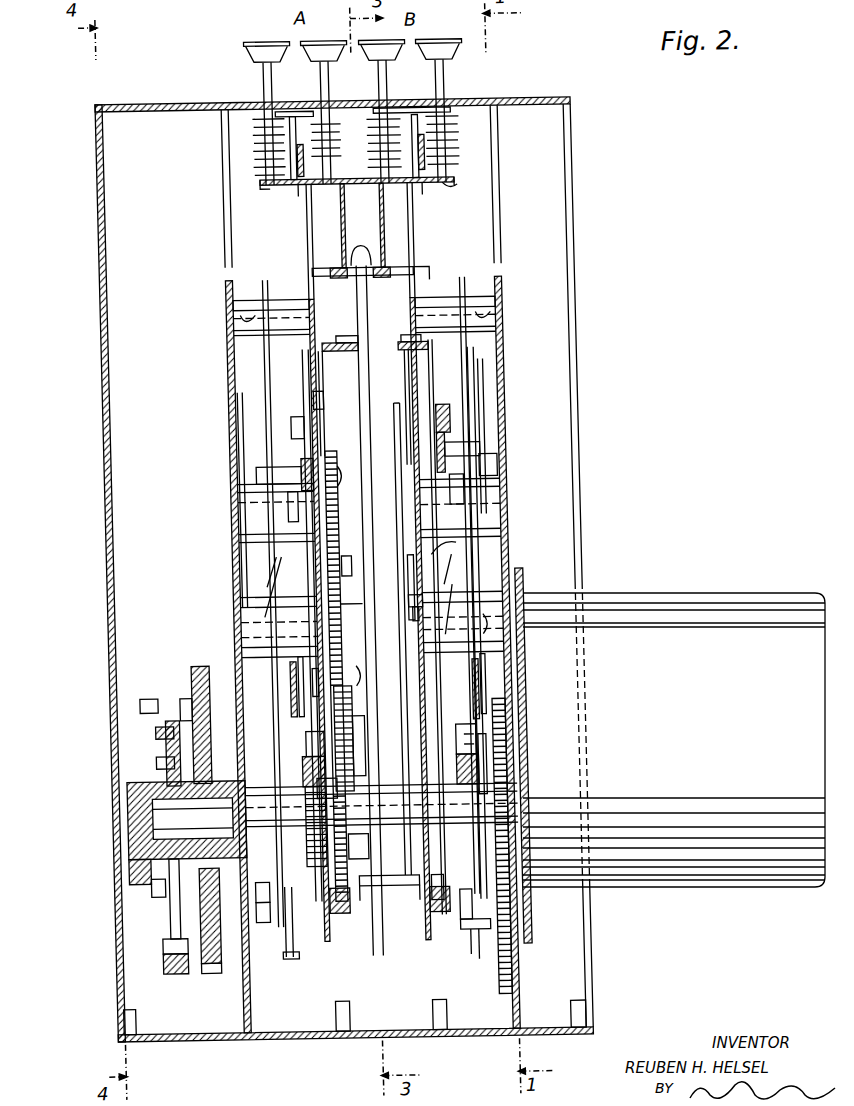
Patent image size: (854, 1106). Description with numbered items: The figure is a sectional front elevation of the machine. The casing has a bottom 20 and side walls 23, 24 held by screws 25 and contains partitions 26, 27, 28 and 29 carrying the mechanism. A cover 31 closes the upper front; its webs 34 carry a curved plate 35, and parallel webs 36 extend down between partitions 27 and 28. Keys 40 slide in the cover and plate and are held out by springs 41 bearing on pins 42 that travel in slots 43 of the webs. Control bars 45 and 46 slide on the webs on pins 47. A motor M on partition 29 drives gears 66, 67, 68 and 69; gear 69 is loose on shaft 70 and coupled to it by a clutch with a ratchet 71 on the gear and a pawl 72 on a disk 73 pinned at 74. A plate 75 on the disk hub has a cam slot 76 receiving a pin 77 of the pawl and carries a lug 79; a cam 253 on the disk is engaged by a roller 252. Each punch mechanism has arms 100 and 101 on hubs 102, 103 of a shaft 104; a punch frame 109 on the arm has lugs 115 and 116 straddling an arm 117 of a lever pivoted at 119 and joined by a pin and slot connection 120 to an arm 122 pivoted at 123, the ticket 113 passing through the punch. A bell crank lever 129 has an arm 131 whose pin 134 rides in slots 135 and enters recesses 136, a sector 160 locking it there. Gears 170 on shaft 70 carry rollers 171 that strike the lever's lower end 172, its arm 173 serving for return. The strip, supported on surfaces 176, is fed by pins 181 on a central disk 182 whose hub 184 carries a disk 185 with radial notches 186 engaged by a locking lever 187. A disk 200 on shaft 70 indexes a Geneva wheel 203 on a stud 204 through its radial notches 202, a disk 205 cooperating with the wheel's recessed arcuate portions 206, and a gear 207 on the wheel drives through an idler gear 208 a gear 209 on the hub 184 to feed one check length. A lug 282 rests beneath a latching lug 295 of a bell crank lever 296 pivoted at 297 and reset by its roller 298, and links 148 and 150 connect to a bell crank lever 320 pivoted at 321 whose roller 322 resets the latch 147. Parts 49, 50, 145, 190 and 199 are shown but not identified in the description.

The bottom 20 is at (295, 1042).
The side wall 23 is at (95, 935).
The side wall 24 is at (571, 930).
The screws 25 is at (563, 1015).
The partition 26 is at (232, 990).
The partition 27 is at (310, 348).
The partition 28 is at (412, 330).
The partition 29 is at (498, 975).
The cover 31 is at (196, 104).
The webs 34 is at (296, 195).
The plate 35 is at (342, 210).
The parallel webs 36 is at (342, 252).
The keys 40 is at (378, 86).
The springs 41 is at (262, 158).
The lugs or pins 42 is at (276, 110).
The slots 43 is at (385, 132).
The control bar 45 is at (425, 190).
The control bar 46 is at (283, 190).
The pins or screws 47 is at (262, 146).
The contact spring 49 is at (262, 126).
The contact spring 50 is at (384, 156).
The gear 66 is at (491, 730).
The gear 67 is at (511, 945).
The gear 68 is at (200, 920).
The gear 69 is at (184, 975).
The shaft 70 is at (218, 800).
The ratchet 71 is at (158, 885).
The pawl 72 is at (195, 715).
The disk 73 is at (140, 896).
The pin 74 is at (140, 871).
The plate 75 is at (142, 740).
The inclined cam slot 76 is at (168, 700).
The pin 77 is at (142, 764).
The lug 79 is at (134, 700).
The arm 100 is at (455, 568).
The arm 101 is at (292, 580).
The hub or sleeve 102 is at (462, 598).
The hub or sleeve 103 is at (294, 560).
The shaft 104 is at (250, 505).
The punch frame 109 is at (260, 540).
The ticket 113 is at (412, 270).
The lug 115 is at (268, 480).
The lug 116 is at (248, 517).
The arm 117 is at (250, 645).
The pivot 119 is at (250, 660).
The pin and slot connection 120 is at (230, 400).
The arm 122 is at (258, 292).
The pivot 123 is at (228, 318).
The bell crank lever 129 is at (286, 432).
The upwardly extending arm 131 is at (296, 385).
The lug or pin 134 is at (316, 358).
The slots 135 is at (316, 405).
The recesses 136 is at (318, 347).
The rack gear 145 is at (312, 447).
The latch 147 is at (364, 385).
The link 148 is at (304, 745).
The link 150 is at (286, 770).
The sector 160 is at (314, 408).
The gears 170 is at (322, 916).
The roller 171 is at (262, 915).
The lower end 172 is at (250, 900).
The laterally extending arm 173 is at (284, 700).
The surfaces 176 is at (336, 284).
The peripheral lugs or pins 181 is at (366, 262).
The central disk 182 is at (385, 450).
The hub 184 is at (396, 592).
The disk 185 is at (396, 606).
The radial notches 186 is at (400, 622).
The lever 187 is at (350, 740).
The bracket 190 is at (378, 890).
The pawl 199 is at (352, 605).
The disk 200 is at (352, 845).
The radial notches 202 is at (338, 772).
The Geneva wheel 203 is at (332, 690).
The stud 204 is at (340, 725).
The disk 205 is at (344, 800).
The recessed arcuate portions 206 is at (338, 848).
The gear 207 is at (300, 680).
The idler gear 208 is at (332, 580).
The gear 209 is at (330, 475).
The roller 252 is at (150, 968).
The cam 253 is at (150, 940).
The lug 282 is at (488, 470).
The latching lug 295 is at (445, 550).
The bell crank lever 296 is at (420, 940).
The pivot 297 is at (450, 960).
The roller 298 is at (460, 968).
The bell crank lever 320 is at (300, 975).
The pivot 321 is at (274, 955).
The roller 322 is at (270, 930).
The motor M is at (745, 597).